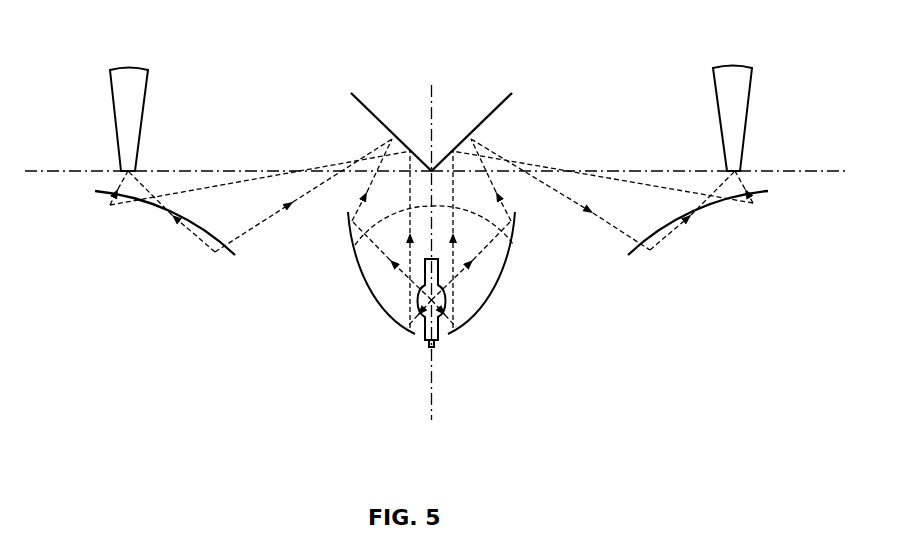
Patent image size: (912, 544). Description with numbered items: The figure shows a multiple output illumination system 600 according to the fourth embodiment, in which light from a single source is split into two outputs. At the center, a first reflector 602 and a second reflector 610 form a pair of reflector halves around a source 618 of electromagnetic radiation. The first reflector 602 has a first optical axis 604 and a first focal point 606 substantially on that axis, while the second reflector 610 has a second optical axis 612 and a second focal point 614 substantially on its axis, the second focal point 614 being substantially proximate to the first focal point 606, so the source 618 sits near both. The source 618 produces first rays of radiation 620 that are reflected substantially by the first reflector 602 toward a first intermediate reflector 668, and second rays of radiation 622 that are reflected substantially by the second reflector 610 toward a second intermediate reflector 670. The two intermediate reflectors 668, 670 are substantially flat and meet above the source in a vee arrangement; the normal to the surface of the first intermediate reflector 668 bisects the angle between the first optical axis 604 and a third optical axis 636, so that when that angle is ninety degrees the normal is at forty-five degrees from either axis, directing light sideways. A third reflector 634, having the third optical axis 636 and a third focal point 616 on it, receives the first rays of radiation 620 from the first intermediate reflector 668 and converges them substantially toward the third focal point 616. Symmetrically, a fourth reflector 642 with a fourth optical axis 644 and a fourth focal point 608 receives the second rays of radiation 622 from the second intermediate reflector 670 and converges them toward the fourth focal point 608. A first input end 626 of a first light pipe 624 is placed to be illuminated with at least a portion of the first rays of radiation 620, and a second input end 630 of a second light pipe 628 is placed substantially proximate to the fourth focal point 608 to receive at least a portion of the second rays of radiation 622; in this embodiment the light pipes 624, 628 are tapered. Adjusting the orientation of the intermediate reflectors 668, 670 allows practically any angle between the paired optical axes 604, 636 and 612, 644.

The multiple output illumination system 600 is at (104, 48).
The first reflector 602 is at (362, 273).
The first optical axis 604 is at (364, 266).
The first focal point 606 is at (472, 321).
The fourth focal point 608 is at (680, 153).
The second reflector 610 is at (498, 277).
The second optical axis 612 is at (431, 418).
The second focal point 614 is at (450, 321).
The third focal point 616 is at (184, 151).
The source of electromagnetic radiation 618 is at (427, 349).
The first rays of radiation 620 is at (355, 245).
The second rays of radiation 622 is at (513, 244).
The first light pipe 624 is at (133, 87).
The first input end 626 is at (128, 168).
The second light pipe 628 is at (740, 87).
The second input end 630 is at (733, 167).
The third reflector 634 is at (165, 240).
The third optical axis 636 is at (47, 171).
The fourth reflector 642 is at (698, 240).
The fourth optical axis 644 is at (786, 169).
The first intermediate reflector 668 is at (378, 118).
The second intermediate reflector 670 is at (485, 118).